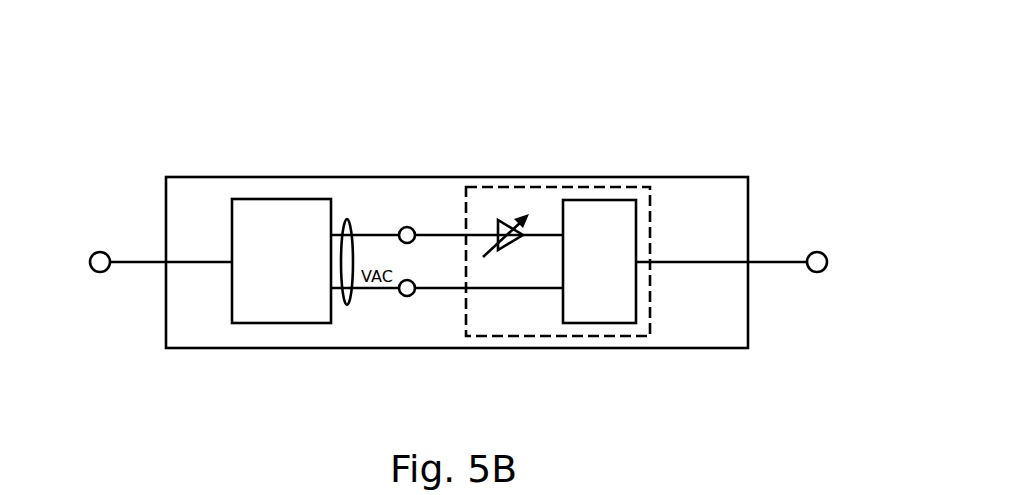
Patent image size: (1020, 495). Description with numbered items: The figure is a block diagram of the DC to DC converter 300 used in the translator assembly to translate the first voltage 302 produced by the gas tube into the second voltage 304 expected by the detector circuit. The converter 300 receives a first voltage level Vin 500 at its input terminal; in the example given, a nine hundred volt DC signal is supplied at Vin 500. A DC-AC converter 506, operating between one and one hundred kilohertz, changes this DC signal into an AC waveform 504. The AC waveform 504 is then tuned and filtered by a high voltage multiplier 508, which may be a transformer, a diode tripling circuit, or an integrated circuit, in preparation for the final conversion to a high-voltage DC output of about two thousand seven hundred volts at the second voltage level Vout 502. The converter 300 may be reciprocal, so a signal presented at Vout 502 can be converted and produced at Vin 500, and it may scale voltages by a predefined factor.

The DC to DC converter 300 is at (197, 176).
The first voltage V1(ω) 302 is at (136, 250).
The second voltage V2(ω) 304 is at (784, 144).
The first voltage level Vin 500 is at (100, 272).
The second voltage level Vout 502 is at (817, 272).
The AC waveform 504 is at (347, 221).
The DC-AC converter 506 is at (290, 199).
The high voltage multiplier 508 is at (558, 186).